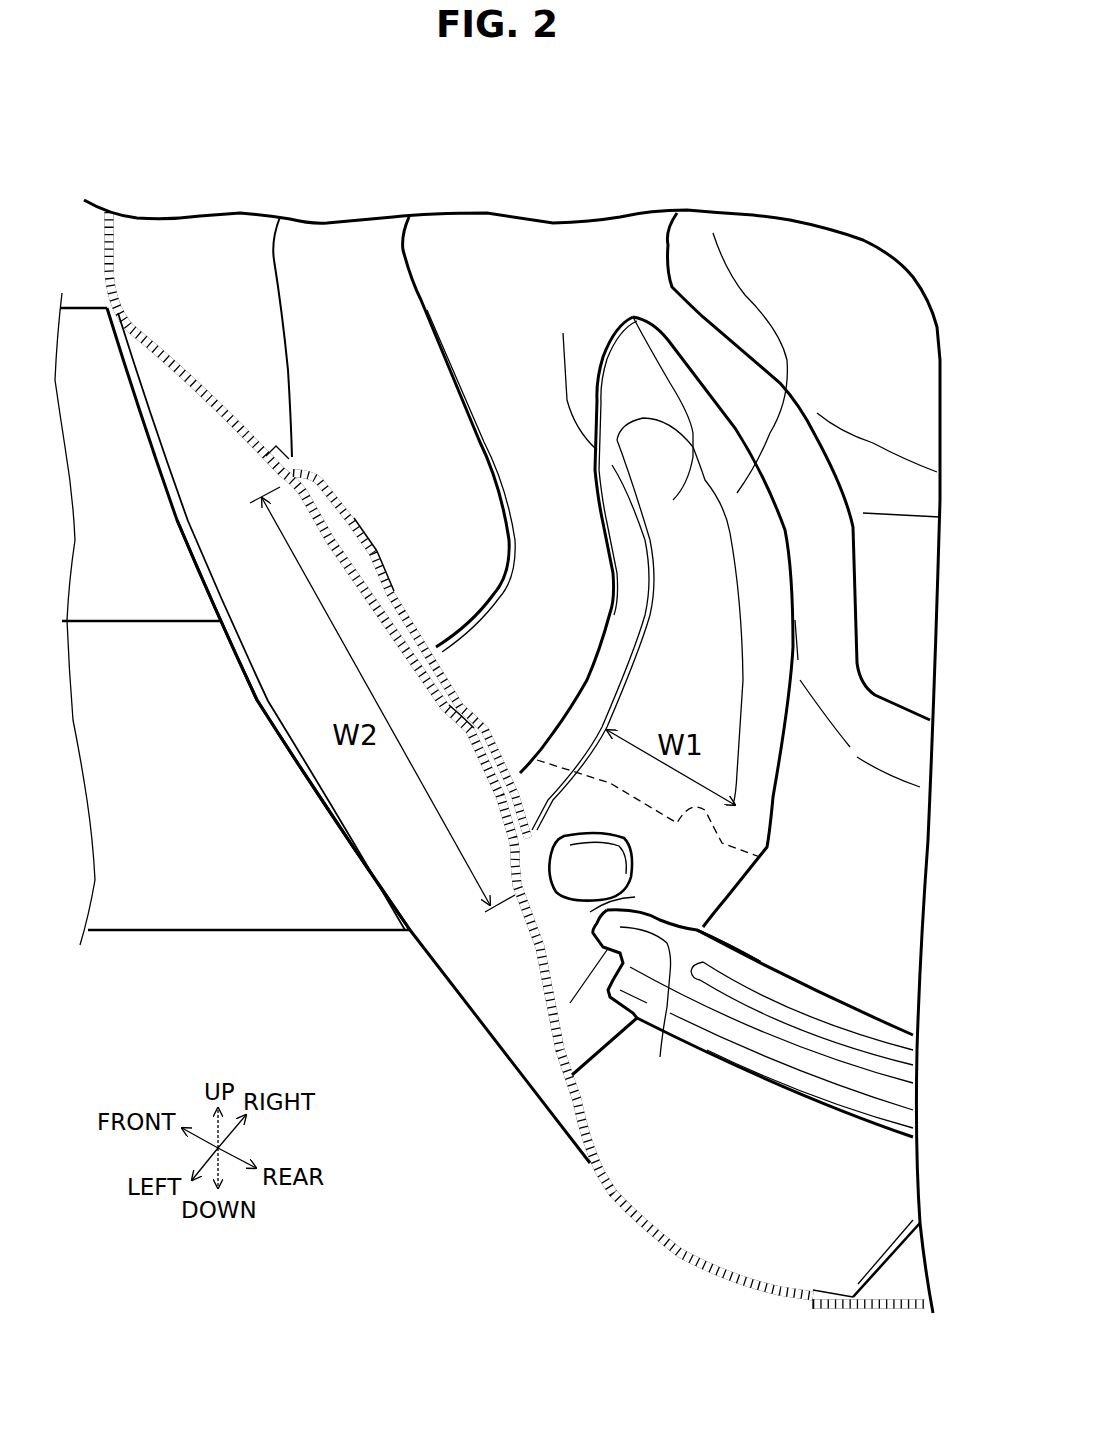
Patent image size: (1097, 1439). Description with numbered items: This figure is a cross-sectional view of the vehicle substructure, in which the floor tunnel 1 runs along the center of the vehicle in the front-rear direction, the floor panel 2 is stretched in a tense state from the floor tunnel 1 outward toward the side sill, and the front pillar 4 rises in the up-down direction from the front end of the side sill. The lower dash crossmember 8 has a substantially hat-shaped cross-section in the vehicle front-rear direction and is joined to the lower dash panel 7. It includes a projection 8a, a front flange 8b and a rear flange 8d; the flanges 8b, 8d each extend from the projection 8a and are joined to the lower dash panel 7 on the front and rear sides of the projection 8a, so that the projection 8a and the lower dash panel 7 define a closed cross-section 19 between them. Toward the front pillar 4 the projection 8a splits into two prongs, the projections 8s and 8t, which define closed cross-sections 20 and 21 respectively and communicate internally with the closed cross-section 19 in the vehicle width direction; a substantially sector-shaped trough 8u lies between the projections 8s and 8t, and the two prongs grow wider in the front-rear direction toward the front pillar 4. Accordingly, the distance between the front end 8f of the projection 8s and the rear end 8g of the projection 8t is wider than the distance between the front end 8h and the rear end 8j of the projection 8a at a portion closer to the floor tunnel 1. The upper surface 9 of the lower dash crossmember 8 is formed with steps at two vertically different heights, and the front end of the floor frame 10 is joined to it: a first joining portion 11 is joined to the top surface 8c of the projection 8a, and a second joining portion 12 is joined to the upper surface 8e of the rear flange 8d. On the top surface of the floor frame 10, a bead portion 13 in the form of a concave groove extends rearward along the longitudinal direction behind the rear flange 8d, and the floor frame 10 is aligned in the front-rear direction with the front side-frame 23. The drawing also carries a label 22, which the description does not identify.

The floor tunnel 1 is at (847, 297).
The floor panel 2 is at (907, 1270).
The front pillar 4 is at (183, 583).
The lower dash panel 7 is at (500, 293).
The lower dash crossmember 8 is at (735, 155).
The projection 8a is at (633, 317).
The front flange 8b is at (563, 333).
The top surface 8c is at (707, 937).
The rear flange 8d is at (713, 233).
The upper surface 8e is at (697, 890).
The front end 8f is at (293, 467).
The rear end 8g is at (540, 892).
The front end 8h is at (607, 730).
The rear end 8j is at (745, 808).
The projection 8s is at (380, 542).
The projection 8t is at (500, 733).
The trough 8u is at (407, 612).
The upper surface 9 is at (805, 897).
The floor frame 10 is at (807, 1065).
The first joining portion 11 is at (662, 1053).
The second joining portion 12 is at (617, 993).
The bead portion 13 is at (847, 1040).
The closed cross-section 19 is at (760, 857).
The closed cross-section 20 is at (333, 517).
The closed cross-section 21 is at (492, 787).
The door edge 22 is at (257, 700).
The front side-frame 23 is at (187, 900).